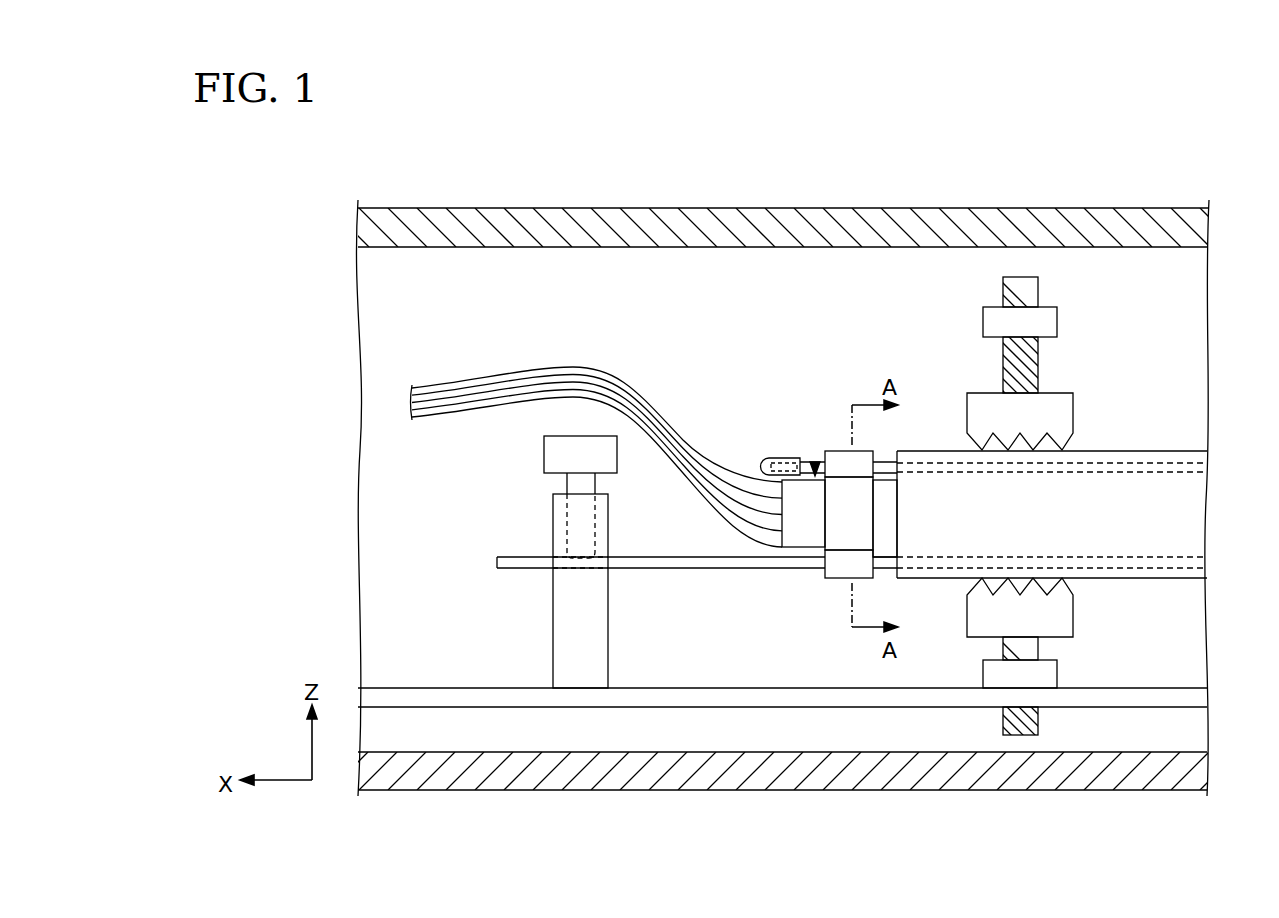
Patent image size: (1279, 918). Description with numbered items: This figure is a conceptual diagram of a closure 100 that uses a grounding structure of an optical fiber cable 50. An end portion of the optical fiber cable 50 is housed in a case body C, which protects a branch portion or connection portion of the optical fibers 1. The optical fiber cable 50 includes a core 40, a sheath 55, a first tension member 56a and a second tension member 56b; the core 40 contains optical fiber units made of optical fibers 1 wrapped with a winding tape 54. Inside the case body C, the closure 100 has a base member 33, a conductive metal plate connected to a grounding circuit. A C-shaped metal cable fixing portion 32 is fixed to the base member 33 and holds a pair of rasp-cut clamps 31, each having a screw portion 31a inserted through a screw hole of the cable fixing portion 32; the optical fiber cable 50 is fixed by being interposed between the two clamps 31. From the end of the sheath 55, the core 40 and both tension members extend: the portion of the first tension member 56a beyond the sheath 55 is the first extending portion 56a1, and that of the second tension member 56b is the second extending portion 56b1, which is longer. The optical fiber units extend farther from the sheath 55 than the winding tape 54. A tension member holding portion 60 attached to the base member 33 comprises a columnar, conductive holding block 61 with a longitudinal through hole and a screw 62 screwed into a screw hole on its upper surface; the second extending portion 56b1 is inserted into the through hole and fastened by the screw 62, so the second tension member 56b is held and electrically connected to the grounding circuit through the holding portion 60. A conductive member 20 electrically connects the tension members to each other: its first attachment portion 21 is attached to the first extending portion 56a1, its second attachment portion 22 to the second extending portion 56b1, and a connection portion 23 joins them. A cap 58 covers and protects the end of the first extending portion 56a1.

The optical fibers 1 is at (518, 372).
The closure 100 is at (1170, 190).
The conductive member 20 is at (859, 516).
The first attachment portion 21 is at (840, 455).
The second attachment portion 22 is at (843, 587).
The connection portion 23 is at (842, 520).
The rasp-cut clamp 31 is at (1047, 408).
The screw portion 31a is at (1025, 292).
The cable fixing portion 32 is at (993, 320).
The base member 33 is at (875, 695).
The core 40 is at (815, 462).
The optical fiber cable 50 is at (1068, 469).
The winding tape 54 is at (800, 532).
The sheath 55 is at (1083, 473).
The first tension member 56a is at (1140, 460).
The first extending portion 56a1 is at (885, 465).
The second tension member 56b is at (1163, 556).
The second extending portion 56b1 is at (678, 570).
The cap 58 is at (777, 457).
The tension member holding portion 60 is at (502, 562).
The holding block 61 is at (521, 591).
The screw 62 is at (563, 452).
The case body C is at (1152, 768).